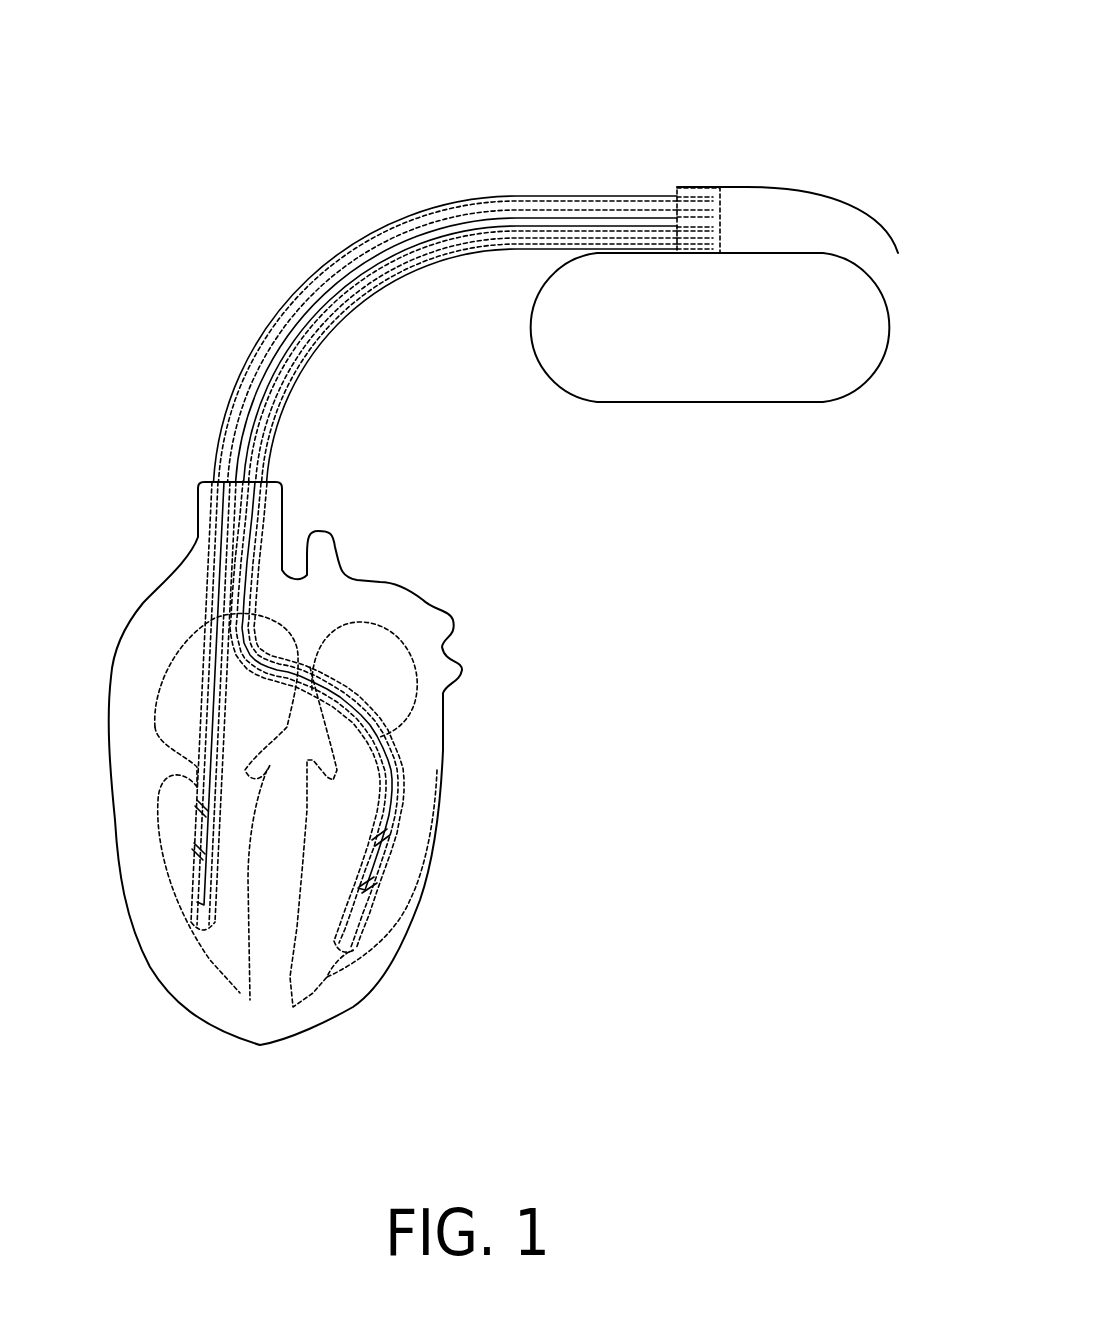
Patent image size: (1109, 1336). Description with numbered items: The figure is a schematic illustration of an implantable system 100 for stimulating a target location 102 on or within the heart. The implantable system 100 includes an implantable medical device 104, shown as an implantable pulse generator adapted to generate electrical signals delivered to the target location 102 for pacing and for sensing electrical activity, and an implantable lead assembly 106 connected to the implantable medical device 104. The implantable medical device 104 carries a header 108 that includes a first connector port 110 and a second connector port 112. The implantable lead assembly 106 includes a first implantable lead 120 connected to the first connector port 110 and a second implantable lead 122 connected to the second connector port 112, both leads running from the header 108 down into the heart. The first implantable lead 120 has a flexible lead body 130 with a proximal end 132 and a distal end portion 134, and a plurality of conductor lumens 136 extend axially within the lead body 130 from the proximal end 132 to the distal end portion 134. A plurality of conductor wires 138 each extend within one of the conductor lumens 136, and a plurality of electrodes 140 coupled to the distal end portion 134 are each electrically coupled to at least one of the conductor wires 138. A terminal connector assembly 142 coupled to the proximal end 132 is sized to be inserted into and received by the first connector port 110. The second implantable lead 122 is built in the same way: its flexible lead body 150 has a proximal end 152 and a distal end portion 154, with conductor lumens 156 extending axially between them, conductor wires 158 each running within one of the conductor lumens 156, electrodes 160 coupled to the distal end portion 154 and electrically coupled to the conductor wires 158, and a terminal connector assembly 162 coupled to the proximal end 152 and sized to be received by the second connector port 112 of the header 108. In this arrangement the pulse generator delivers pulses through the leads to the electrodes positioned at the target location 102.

The implantable system 100 is at (770, 80).
The target location 102 is at (323, 977).
The implantable medical device 104 is at (777, 402).
The implantable lead assembly 106 is at (290, 266).
The header 108 is at (888, 232).
The first connector port 110 is at (723, 197).
The second connector port 112 is at (723, 237).
The first implantable lead 120 is at (367, 535).
The second implantable lead 122 is at (453, 589).
The flexible lead body 130 is at (373, 236).
The proximal end 132 is at (615, 195).
The distal end portion 134 is at (200, 750).
The conductor lumens 136 is at (230, 364).
The conductor wires 138 is at (223, 416).
The electrodes 140 is at (193, 913).
The terminal connector assembly 142 is at (690, 195).
The flexible lead body 150 is at (330, 337).
The proximal end 152 is at (634, 250).
The distal end portion 154 is at (380, 727).
The conductor lumens 156 is at (525, 242).
The conductor wires 158 is at (257, 452).
The electrodes 160 is at (353, 950).
The terminal connector assembly 162 is at (706, 250).